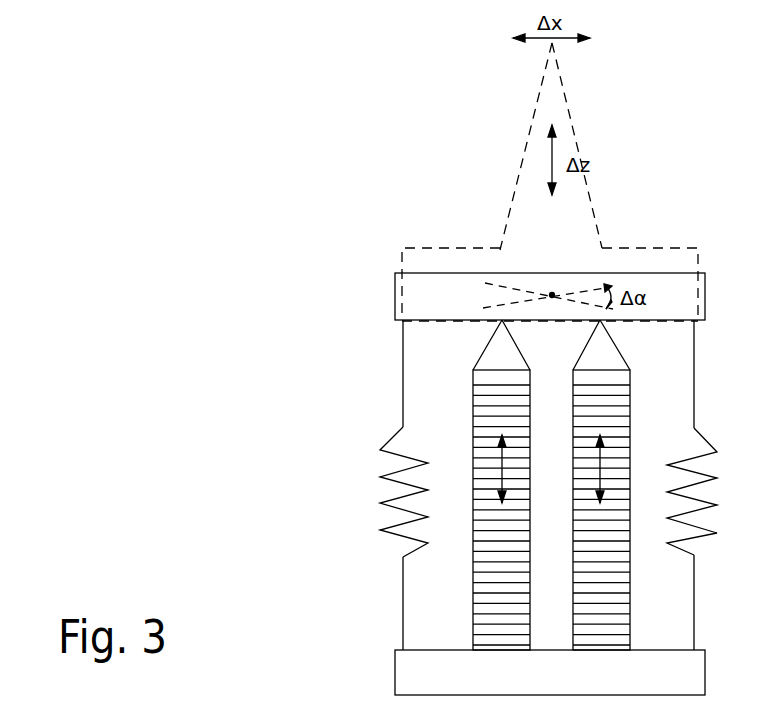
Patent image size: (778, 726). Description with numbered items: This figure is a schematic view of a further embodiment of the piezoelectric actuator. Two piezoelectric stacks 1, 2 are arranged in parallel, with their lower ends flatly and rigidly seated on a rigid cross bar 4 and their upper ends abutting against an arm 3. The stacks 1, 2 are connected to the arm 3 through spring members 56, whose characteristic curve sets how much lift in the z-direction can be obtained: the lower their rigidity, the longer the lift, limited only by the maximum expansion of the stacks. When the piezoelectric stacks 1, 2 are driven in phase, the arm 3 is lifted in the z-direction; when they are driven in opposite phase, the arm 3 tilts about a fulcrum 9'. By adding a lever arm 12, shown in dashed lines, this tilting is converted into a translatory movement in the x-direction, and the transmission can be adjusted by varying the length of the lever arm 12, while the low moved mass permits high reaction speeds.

The lever arm 12 is at (540, 220).
The fulcrum 9' is at (425, 256).
The arm 3 is at (428, 307).
The spring members 56 is at (392, 445).
The piezoelectric stack 1 is at (495, 518).
The piezoelectric stack 2 is at (603, 608).
The cross bar 4 is at (455, 677).